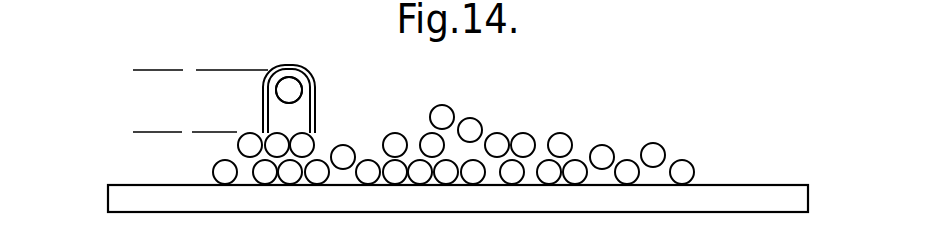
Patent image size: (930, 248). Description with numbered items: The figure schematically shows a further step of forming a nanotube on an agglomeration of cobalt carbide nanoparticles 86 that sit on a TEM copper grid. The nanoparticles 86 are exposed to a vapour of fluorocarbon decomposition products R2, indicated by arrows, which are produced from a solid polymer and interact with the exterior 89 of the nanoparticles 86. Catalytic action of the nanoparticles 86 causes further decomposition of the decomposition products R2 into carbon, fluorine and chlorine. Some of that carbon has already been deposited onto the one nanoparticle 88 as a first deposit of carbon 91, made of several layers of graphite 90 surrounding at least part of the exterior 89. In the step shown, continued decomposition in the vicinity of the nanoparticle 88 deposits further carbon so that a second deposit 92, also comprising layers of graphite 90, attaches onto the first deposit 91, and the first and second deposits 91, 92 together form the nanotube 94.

The cobalt carbide nanoparticles 86 is at (652, 153).
The nanoparticle 88 is at (293, 90).
The exterior 89 is at (300, 98).
The layers of graphite 90 is at (286, 65).
The first deposit of carbon 91 is at (195, 70).
The second deposit of carbon 92 is at (195, 107).
The nanotube 94 is at (133, 70).
The decomposition products R2 is at (235, 138).